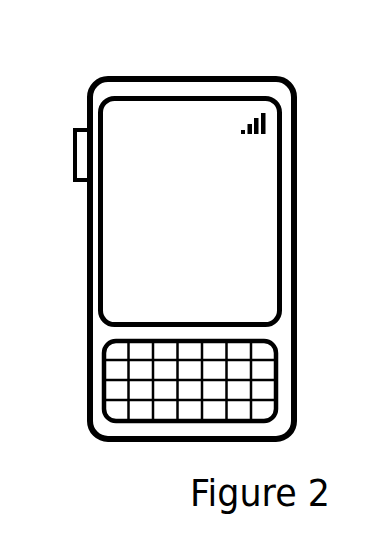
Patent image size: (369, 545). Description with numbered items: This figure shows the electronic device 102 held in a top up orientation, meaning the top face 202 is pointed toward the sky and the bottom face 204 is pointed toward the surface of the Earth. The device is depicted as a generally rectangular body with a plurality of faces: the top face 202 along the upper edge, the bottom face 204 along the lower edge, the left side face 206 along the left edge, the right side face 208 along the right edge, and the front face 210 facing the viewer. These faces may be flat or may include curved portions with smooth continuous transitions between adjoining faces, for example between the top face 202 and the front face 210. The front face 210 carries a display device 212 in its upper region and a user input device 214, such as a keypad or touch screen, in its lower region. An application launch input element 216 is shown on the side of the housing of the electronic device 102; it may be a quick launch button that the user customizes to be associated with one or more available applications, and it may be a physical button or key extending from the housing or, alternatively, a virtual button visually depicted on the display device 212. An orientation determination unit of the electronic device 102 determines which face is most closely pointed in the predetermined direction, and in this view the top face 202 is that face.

The electronic device 102 is at (58, 64).
The top face 202 is at (183, 76).
The bottom face 204 is at (120, 443).
The left side face 206 is at (86, 274).
The right side face 208 is at (296, 244).
The front face 210 is at (100, 333).
The display device 212 is at (235, 186).
The user input device 214 is at (243, 367).
The application launch input element 216 is at (74, 161).